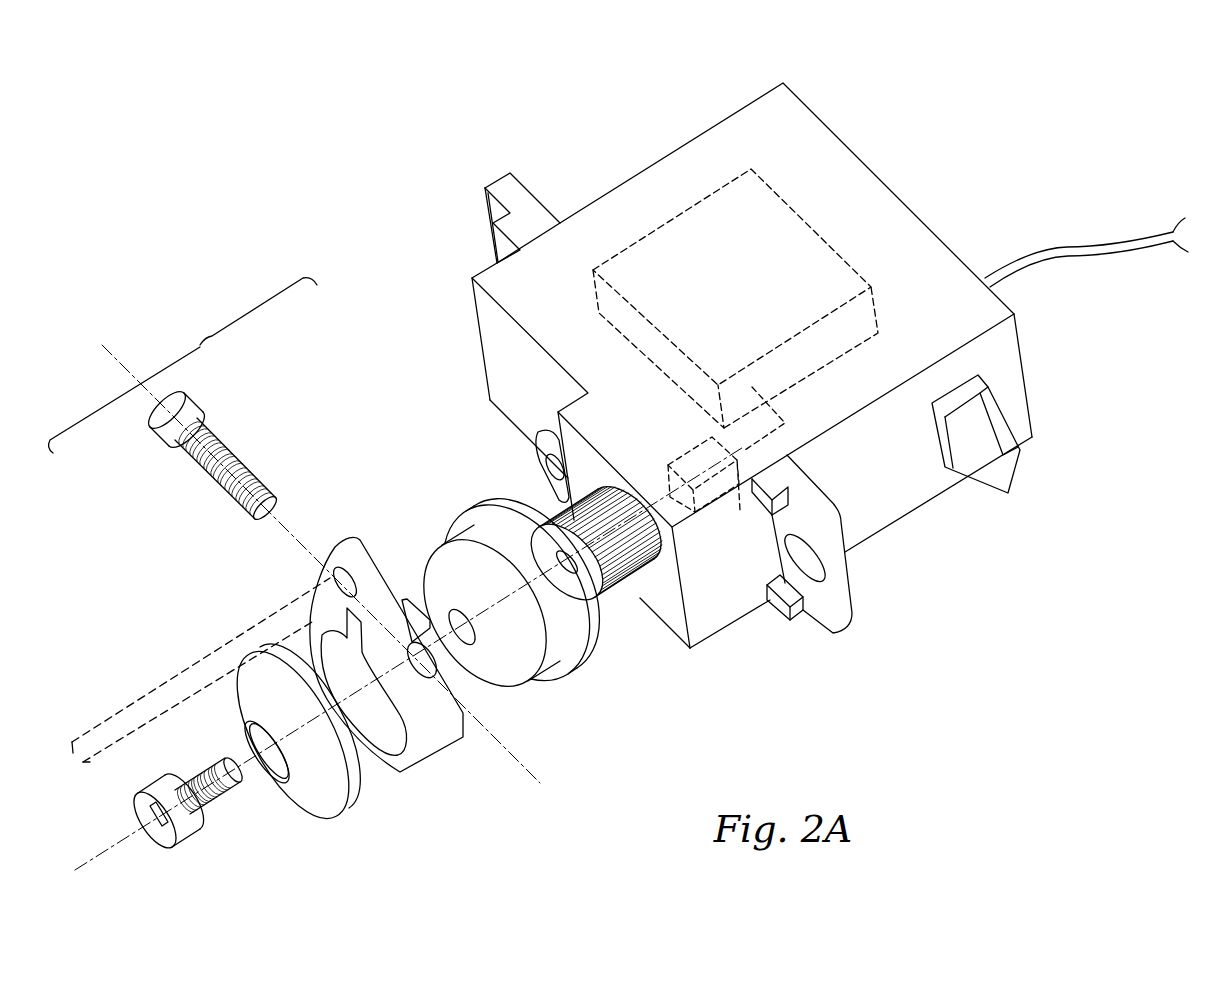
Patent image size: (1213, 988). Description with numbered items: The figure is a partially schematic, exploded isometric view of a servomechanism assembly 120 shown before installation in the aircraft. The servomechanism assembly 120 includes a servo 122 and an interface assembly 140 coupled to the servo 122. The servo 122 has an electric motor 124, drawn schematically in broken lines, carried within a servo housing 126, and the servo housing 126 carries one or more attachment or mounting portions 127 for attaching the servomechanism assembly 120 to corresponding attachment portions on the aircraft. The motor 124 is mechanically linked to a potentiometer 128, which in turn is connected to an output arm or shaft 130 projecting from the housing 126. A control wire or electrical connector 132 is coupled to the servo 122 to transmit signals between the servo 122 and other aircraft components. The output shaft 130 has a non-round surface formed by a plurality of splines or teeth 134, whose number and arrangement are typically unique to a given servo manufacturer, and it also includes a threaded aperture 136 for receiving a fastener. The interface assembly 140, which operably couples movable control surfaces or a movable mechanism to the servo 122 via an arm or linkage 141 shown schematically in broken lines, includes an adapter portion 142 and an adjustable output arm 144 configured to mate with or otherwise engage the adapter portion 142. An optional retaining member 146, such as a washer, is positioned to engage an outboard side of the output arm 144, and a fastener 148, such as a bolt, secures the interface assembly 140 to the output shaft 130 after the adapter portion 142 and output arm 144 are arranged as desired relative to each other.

The servomechanism assembly 120 is at (1003, 120).
The servo 122 is at (927, 220).
The electric motor 124 is at (810, 253).
The servo housing 126 is at (817, 132).
The mounting portions 127 is at (520, 187).
The potentiometer 128 is at (710, 480).
The output shaft 130 is at (632, 577).
The control wire 132 is at (1112, 247).
The splines 134 is at (550, 470).
The threaded aperture 136 is at (537, 528).
The interface assembly 140 is at (200, 347).
The linkage 141 is at (146, 699).
The adapter portion 142 is at (518, 667).
The adjustable output arm 144 is at (443, 740).
The retaining member 146 is at (320, 805).
The fastener 148 is at (190, 825).